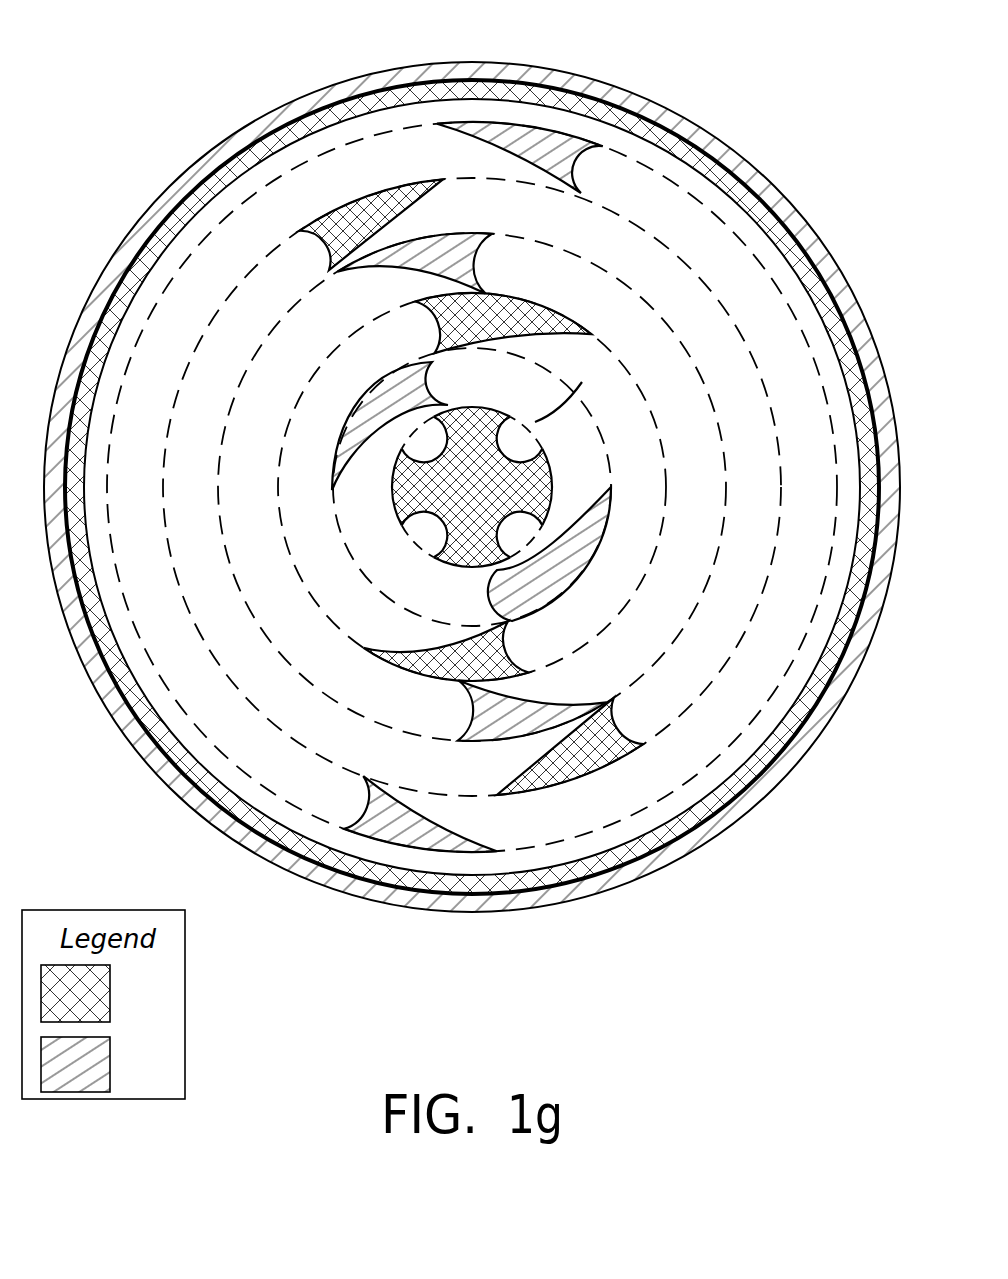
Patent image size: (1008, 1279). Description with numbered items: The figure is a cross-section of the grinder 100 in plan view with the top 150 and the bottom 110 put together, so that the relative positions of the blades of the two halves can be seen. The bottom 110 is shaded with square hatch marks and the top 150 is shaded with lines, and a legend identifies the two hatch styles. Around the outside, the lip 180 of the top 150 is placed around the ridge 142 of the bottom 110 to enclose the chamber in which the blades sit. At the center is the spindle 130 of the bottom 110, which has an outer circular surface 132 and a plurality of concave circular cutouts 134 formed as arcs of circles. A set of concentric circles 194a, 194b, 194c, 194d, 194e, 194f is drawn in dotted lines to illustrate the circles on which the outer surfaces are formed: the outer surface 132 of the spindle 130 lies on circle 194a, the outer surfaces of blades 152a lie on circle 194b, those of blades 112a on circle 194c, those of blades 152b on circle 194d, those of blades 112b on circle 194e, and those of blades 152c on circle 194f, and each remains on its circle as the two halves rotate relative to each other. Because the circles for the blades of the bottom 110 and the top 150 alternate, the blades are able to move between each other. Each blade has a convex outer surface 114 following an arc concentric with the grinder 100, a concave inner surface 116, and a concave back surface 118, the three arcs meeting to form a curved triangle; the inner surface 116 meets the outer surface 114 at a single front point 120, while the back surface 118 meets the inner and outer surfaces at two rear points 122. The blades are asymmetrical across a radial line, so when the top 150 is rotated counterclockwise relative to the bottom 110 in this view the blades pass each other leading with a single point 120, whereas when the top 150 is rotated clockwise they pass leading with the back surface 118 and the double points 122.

The grinder 100 is at (766, 122).
The lip 180 is at (409, 72).
The ridge 142 is at (266, 145).
The bottom 110 is at (105, 993).
The top 150 is at (105, 1064).
The blade 112a is at (500, 314).
The blade 112b is at (362, 212).
The blade 152a is at (385, 405).
The blade 152b is at (450, 250).
The blade 152c is at (578, 162).
The outer surface 114 is at (592, 570).
The inner surface 116 is at (428, 828).
The back surface 118 is at (622, 736).
The front point 120 is at (607, 694).
The rear point 122 is at (528, 672).
The spindle 130 is at (588, 381).
The outer circular surface 132 is at (527, 479).
The concave circular cutout 134 is at (532, 443).
The circle 194a is at (404, 540).
The circle 194b is at (358, 565).
The circle 194c is at (308, 574).
The circle 194d is at (318, 688).
The circle 194e is at (280, 722).
The circle 194f is at (163, 755).